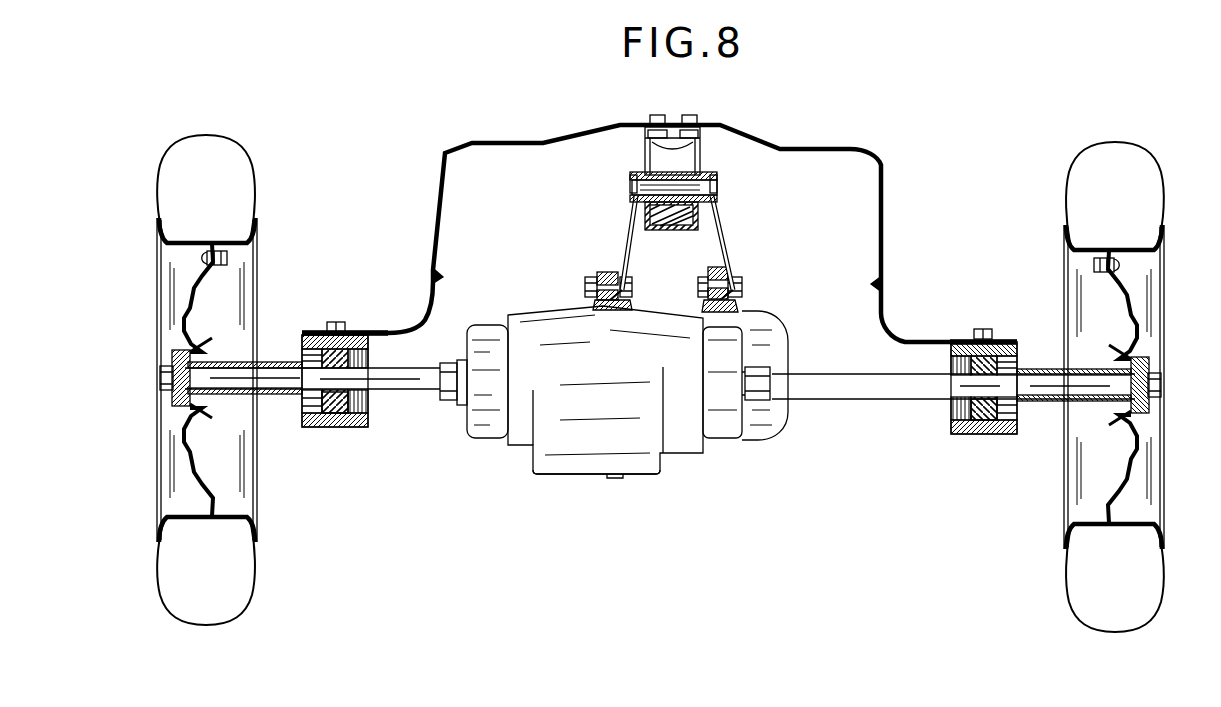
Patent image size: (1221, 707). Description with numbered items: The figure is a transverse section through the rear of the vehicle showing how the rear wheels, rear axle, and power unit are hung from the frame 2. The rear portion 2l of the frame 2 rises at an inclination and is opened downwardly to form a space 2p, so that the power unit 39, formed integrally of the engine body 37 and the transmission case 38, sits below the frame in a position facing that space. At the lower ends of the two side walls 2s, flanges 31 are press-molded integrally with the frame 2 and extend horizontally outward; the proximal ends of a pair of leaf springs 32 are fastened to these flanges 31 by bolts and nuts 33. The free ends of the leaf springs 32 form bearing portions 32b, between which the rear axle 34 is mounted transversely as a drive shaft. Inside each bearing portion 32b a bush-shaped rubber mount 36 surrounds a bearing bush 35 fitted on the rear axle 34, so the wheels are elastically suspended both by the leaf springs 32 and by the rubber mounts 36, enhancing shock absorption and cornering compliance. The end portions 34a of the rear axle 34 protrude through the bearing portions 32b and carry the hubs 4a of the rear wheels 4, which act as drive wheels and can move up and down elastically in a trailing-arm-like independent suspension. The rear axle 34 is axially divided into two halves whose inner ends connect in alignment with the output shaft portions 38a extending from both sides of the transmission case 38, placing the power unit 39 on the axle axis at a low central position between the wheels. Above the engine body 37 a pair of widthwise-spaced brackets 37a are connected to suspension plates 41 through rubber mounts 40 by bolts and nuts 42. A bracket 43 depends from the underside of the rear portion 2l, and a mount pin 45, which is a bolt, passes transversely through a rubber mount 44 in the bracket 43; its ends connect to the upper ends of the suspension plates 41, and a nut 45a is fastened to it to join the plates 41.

The frame 2 is at (489, 138).
The side wall 2s is at (430, 212).
The rear portion 2l is at (873, 162).
The space 2p is at (862, 342).
The rear wheel 4 is at (248, 582).
The hub 4a is at (190, 350).
The flange 31 is at (386, 330).
The leaf spring 32 is at (306, 334).
The bearing portion 32b is at (333, 428).
The bolts and nuts 33 is at (337, 322).
The rear axle 34 is at (408, 385).
The end portion 34a is at (285, 394).
The bearing bush 35 is at (340, 360).
The rubber mount 36 is at (355, 428).
The engine body 37 is at (792, 310).
The bracket 37a is at (607, 272).
The transmission case 38 is at (643, 463).
The output shaft portion 38a is at (450, 398).
The power unit 39 is at (560, 427).
The rubber mount 40 is at (592, 300).
The suspension plate 41 is at (630, 218).
The bolts and nuts 42 is at (587, 279).
The bracket 43 is at (702, 142).
The rubber mount 44 is at (638, 210).
The mount pin 45 is at (716, 199).
The nut 45a is at (703, 160).